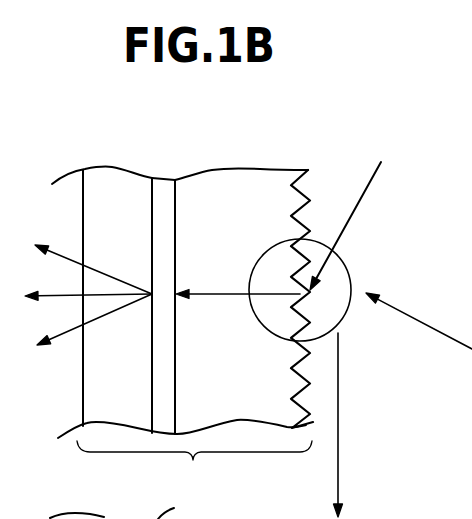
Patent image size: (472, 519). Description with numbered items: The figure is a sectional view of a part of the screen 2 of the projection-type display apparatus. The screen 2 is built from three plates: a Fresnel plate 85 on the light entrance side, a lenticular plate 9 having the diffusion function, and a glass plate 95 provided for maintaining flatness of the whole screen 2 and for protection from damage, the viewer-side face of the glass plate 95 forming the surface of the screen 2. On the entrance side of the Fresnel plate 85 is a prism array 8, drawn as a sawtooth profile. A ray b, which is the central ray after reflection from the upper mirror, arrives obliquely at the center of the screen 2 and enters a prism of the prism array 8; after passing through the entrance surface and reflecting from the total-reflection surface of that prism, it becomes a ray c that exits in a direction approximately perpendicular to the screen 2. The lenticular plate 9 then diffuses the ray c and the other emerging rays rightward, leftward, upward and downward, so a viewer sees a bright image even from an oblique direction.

The screen 2 is at (186, 489).
The glass plate 95 is at (115, 186).
The lenticular plate 9 is at (160, 188).
The Fresnel plate 85 is at (223, 184).
The prism array 8 is at (318, 182).
The ray b is at (345, 233).
The ray c is at (200, 296).